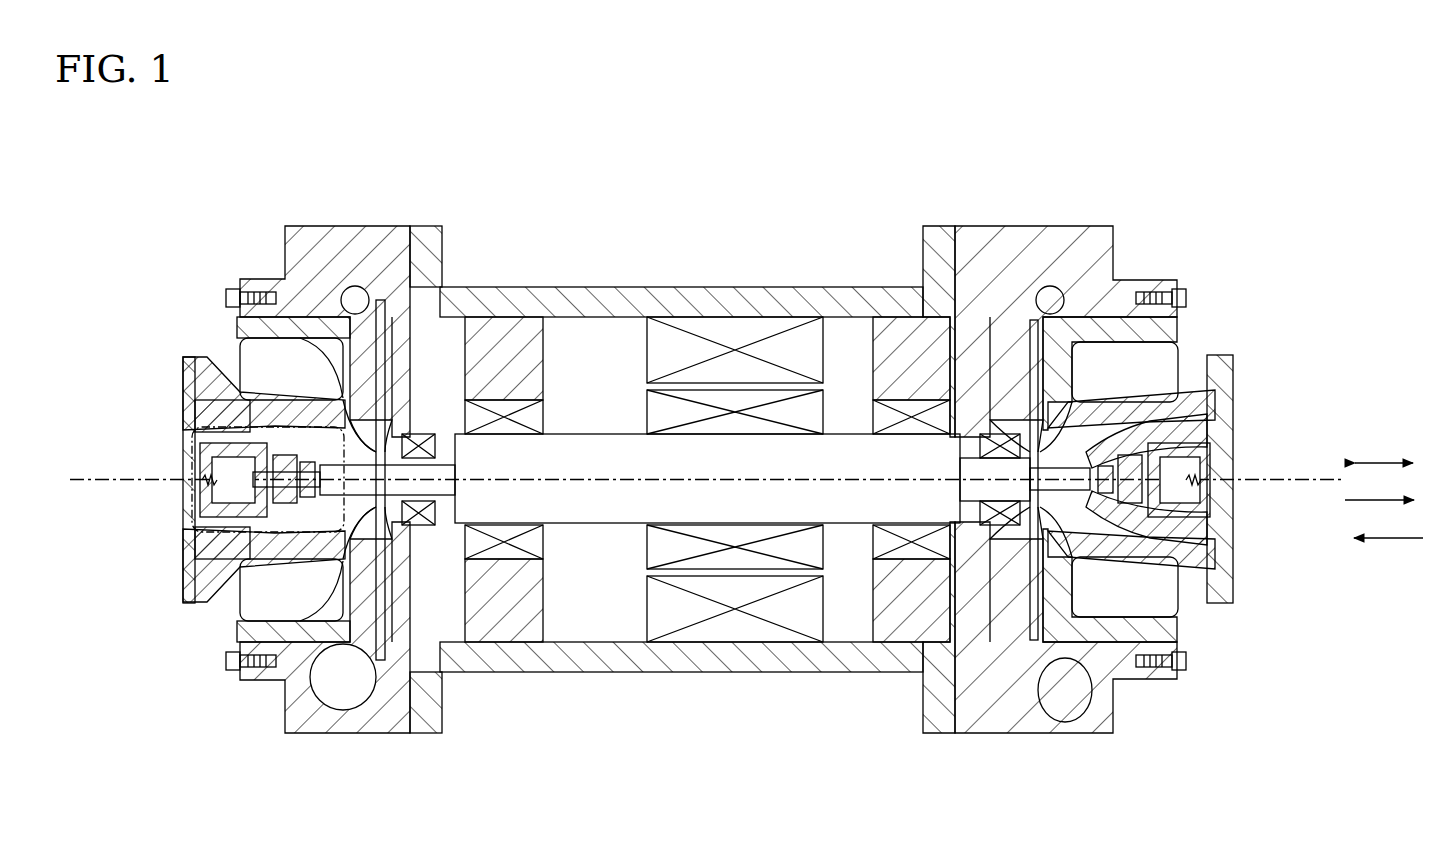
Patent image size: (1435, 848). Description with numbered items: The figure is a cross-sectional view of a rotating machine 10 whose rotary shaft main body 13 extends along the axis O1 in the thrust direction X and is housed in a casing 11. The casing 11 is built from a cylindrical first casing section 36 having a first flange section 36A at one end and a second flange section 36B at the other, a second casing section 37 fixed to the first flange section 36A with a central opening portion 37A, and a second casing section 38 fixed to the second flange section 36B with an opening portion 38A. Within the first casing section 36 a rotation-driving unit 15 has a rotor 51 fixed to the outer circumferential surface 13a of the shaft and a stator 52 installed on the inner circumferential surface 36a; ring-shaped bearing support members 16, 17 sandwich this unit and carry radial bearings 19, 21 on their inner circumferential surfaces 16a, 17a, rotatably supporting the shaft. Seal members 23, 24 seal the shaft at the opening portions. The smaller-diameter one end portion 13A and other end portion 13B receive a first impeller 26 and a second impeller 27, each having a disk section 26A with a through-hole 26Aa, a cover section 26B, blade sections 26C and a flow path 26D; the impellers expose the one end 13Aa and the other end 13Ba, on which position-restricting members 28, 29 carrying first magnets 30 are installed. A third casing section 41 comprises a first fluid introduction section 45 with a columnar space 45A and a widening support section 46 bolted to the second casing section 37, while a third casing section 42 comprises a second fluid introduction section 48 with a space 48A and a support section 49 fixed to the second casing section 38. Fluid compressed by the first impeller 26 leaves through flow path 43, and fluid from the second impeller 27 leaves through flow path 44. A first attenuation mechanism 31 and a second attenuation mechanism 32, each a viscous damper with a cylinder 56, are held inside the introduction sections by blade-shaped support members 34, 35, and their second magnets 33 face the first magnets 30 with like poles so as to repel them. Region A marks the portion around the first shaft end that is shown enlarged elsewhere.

The rotating machine 10 is at (162, 143).
The casing 11 is at (600, 287).
The rotary shaft main body 13 is at (600, 530).
The one end portion 13A is at (340, 525).
The one end 13Aa is at (310, 410).
The other end portion 13B is at (1000, 520).
The other end 13Ba is at (1100, 420).
The outer circumferential surface 13a is at (812, 420).
The rotation-driving unit 15 is at (815, 215).
The bearing support member 16 is at (502, 370).
The inner circumferential surface 16a is at (540, 400).
The bearing support member 17 is at (910, 350).
The inner circumferential surface 17a is at (920, 355).
The radial bearing 19 is at (484, 420).
The radial bearing 21 is at (958, 380).
The seal member 23 is at (432, 522).
The seal member 24 is at (992, 508).
The first impeller 26 is at (368, 525).
The disk section 26A is at (400, 520).
The through-hole 26Aa is at (362, 430).
The cover section 26B is at (372, 525).
The blade sections 26C is at (385, 525).
The flow path 26D is at (375, 300).
The second impeller 27 is at (1120, 345).
The position-restricting member 28 is at (318, 532).
The position-restricting member 29 is at (1128, 525).
The first magnet 30 is at (302, 492).
The first attenuation mechanism 31 is at (183, 494).
The second attenuation mechanism 32 is at (1235, 464).
The second magnet 33 is at (275, 485).
The support members 34 is at (205, 400).
The support members 35 is at (1195, 410).
The first casing section 36 is at (707, 287).
The first flange section 36A is at (428, 250).
The second flange section 36B is at (940, 300).
The inner circumferential surface 36a is at (680, 318).
The second casing section 37 is at (352, 226).
The opening portion 37A is at (418, 515).
The second casing section 38 is at (1015, 738).
The opening portion 38A is at (968, 540).
The third casing section 41 is at (237, 326).
The third casing section 42 is at (1180, 320).
The flow path 43 is at (362, 296).
The flow path 44 is at (1058, 700).
The first fluid introduction section 45 is at (215, 565).
The space 45A is at (240, 580).
The support section 46 is at (292, 330).
The second fluid introduction section 48 is at (1165, 562).
The space 48A is at (1186, 660).
The support section 49 is at (1130, 325).
The rotor 51 is at (770, 400).
The stator 52 is at (742, 330).
The cylinder 56 is at (205, 478).
The region A is at (192, 440).
The axis O1 is at (850, 482).
The X direction X is at (1384, 520).